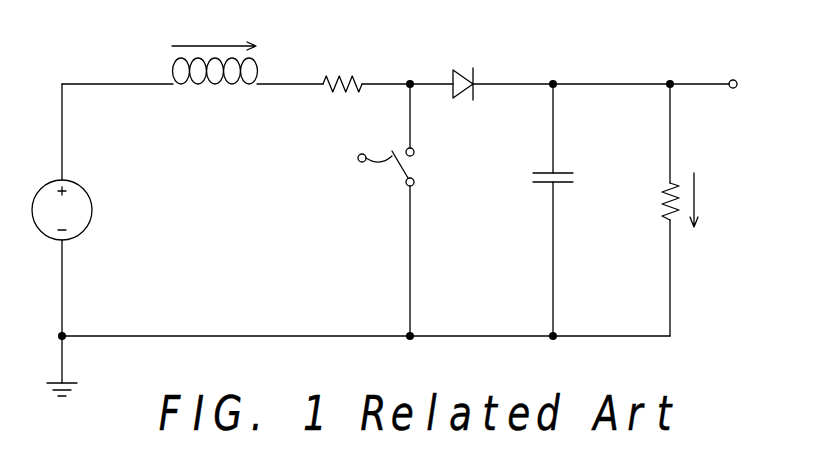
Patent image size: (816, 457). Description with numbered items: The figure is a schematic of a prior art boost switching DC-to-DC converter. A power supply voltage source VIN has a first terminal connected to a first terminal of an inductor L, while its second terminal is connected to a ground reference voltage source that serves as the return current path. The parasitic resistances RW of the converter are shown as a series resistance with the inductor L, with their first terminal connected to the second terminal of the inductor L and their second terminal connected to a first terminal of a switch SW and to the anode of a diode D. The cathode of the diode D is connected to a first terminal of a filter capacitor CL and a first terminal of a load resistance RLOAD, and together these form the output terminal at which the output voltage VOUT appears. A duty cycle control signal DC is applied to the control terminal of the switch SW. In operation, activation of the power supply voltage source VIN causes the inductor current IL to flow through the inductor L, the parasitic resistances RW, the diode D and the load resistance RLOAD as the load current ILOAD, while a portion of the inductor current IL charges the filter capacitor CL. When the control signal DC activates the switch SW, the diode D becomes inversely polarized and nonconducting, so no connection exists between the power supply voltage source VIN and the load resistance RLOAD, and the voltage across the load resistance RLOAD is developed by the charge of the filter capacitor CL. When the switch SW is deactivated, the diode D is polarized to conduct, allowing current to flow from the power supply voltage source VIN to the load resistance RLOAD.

The power supply voltage source VIN is at (62, 210).
The inductor L is at (215, 88).
The inductor current IL is at (214, 35).
The parasitic resistances RW is at (342, 98).
The diode D is at (463, 87).
The switch SW is at (421, 167).
The duty cycle control signal DC is at (357, 160).
The filter capacitor CL is at (568, 180).
The load resistance RLOAD is at (638, 216).
The load current ILOAD is at (722, 200).
The output voltage VOUT is at (736, 85).